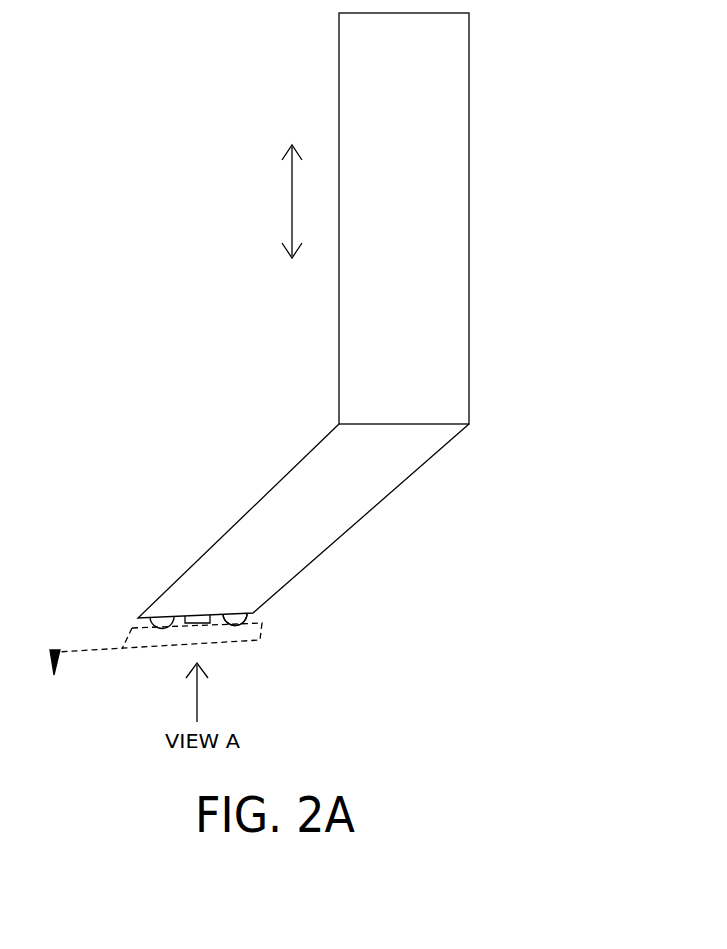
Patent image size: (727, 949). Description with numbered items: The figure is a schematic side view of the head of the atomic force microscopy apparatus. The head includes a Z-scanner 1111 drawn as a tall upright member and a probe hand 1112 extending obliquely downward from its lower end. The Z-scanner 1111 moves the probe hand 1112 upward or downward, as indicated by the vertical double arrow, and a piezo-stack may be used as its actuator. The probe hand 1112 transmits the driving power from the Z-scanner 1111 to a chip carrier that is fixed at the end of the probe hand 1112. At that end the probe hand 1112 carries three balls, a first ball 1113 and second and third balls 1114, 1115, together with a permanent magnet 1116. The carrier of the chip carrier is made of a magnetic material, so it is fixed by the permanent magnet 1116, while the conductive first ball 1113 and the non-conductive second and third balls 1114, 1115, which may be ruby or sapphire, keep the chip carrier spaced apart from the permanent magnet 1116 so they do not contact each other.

The Z-scanner 1111 is at (442, 187).
The probe hand 1112 is at (382, 487).
The first ball 1113 is at (161, 614).
The second ball 1114 is at (236, 613).
The third ball 1115 is at (235, 619).
The permanent magnet 1116 is at (195, 615).